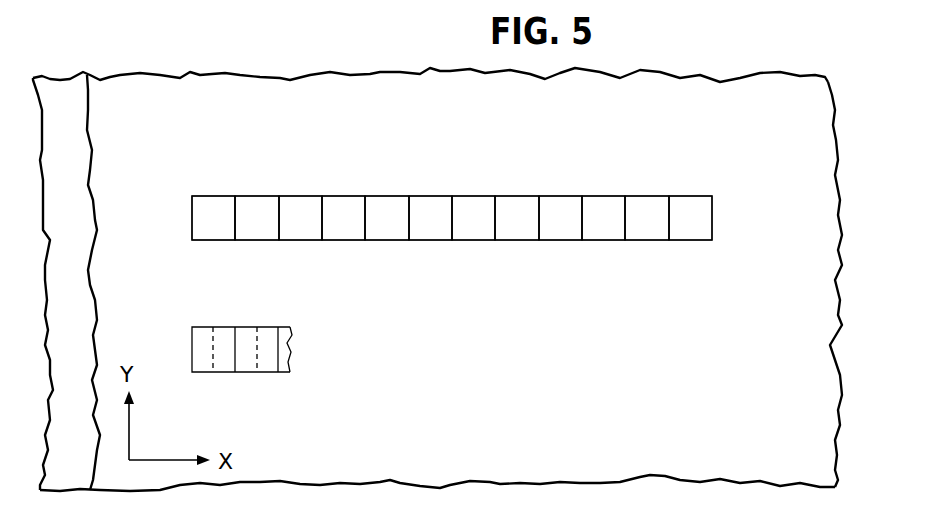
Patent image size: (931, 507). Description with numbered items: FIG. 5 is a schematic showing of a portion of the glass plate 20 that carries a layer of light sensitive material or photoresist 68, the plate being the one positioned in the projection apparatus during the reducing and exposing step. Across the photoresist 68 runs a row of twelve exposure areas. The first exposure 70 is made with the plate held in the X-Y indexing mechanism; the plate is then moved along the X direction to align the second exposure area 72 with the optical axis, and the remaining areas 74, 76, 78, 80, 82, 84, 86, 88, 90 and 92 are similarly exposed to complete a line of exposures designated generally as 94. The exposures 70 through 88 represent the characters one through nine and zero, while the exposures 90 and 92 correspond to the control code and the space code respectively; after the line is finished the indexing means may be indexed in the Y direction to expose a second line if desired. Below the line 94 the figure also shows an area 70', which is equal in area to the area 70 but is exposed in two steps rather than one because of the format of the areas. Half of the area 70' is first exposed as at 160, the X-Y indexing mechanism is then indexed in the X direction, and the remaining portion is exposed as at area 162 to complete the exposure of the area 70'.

The glass plate 20 is at (59, 88).
The photoresist 68 is at (224, 88).
The first exposure 70 is at (191, 187).
The area exposed in two steps 70' is at (212, 331).
The second exposure area 72 is at (268, 233).
The exposure area 74 is at (305, 202).
The exposure area 76 is at (354, 232).
The exposure area 78 is at (374, 202).
The exposure area 80 is at (438, 231).
The exposure area 82 is at (463, 203).
The exposure area 84 is at (531, 229).
The exposure area 86 is at (549, 202).
The exposure area 88 is at (613, 229).
The exposure area for control code 90 is at (637, 202).
The exposure area for space code 92 is at (677, 233).
The line of exposures 94 is at (714, 189).
The first half area 160 is at (203, 363).
The remaining area 162 is at (227, 360).